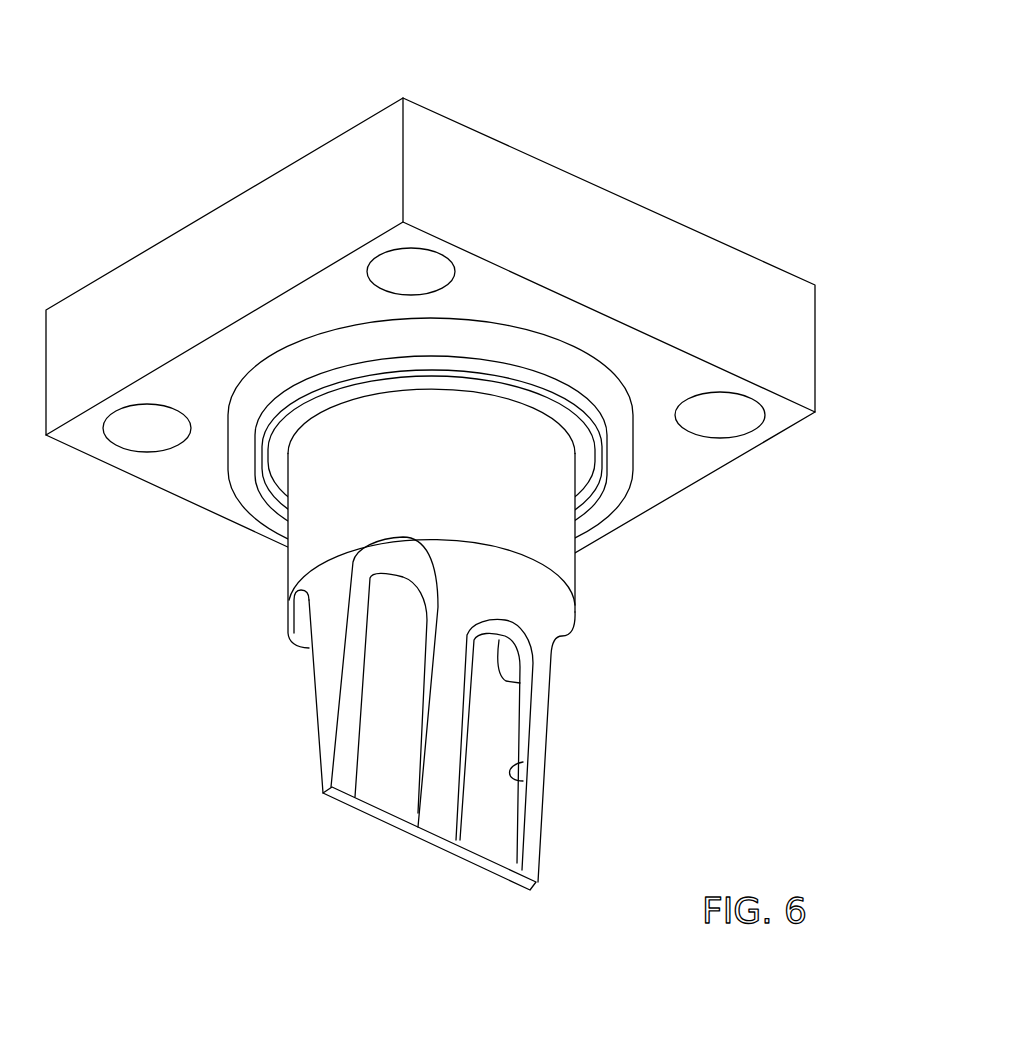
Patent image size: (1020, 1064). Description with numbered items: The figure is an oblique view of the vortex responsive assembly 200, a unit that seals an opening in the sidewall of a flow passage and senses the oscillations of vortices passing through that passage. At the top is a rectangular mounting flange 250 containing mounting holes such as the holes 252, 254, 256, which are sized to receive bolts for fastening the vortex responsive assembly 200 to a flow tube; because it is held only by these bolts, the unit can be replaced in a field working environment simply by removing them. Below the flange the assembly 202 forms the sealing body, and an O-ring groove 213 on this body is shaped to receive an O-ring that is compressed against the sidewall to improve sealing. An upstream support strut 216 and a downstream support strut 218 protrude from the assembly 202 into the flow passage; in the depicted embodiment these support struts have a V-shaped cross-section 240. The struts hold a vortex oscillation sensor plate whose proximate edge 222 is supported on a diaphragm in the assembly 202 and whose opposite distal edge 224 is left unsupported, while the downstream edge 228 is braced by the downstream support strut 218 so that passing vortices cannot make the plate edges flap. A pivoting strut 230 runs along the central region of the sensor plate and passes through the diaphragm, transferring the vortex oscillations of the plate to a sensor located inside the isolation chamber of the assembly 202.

The vortex responsive assembly 200 is at (729, 71).
The assembly 202 is at (293, 588).
The O-ring groove 213 is at (595, 485).
The upstream support strut 216 is at (317, 698).
The downstream support strut 218 is at (545, 813).
The proximate edge 222 is at (523, 682).
The distal edge 224 is at (465, 863).
The downstream edge 228 is at (518, 763).
The pivoting strut 230 is at (458, 745).
The V-shaped cross-section 240 is at (331, 648).
The rectangular mounting flange 250 is at (609, 191).
The mounting hole 252 is at (145, 453).
The mounting hole 254 is at (384, 256).
The mounting hole 256 is at (700, 393).